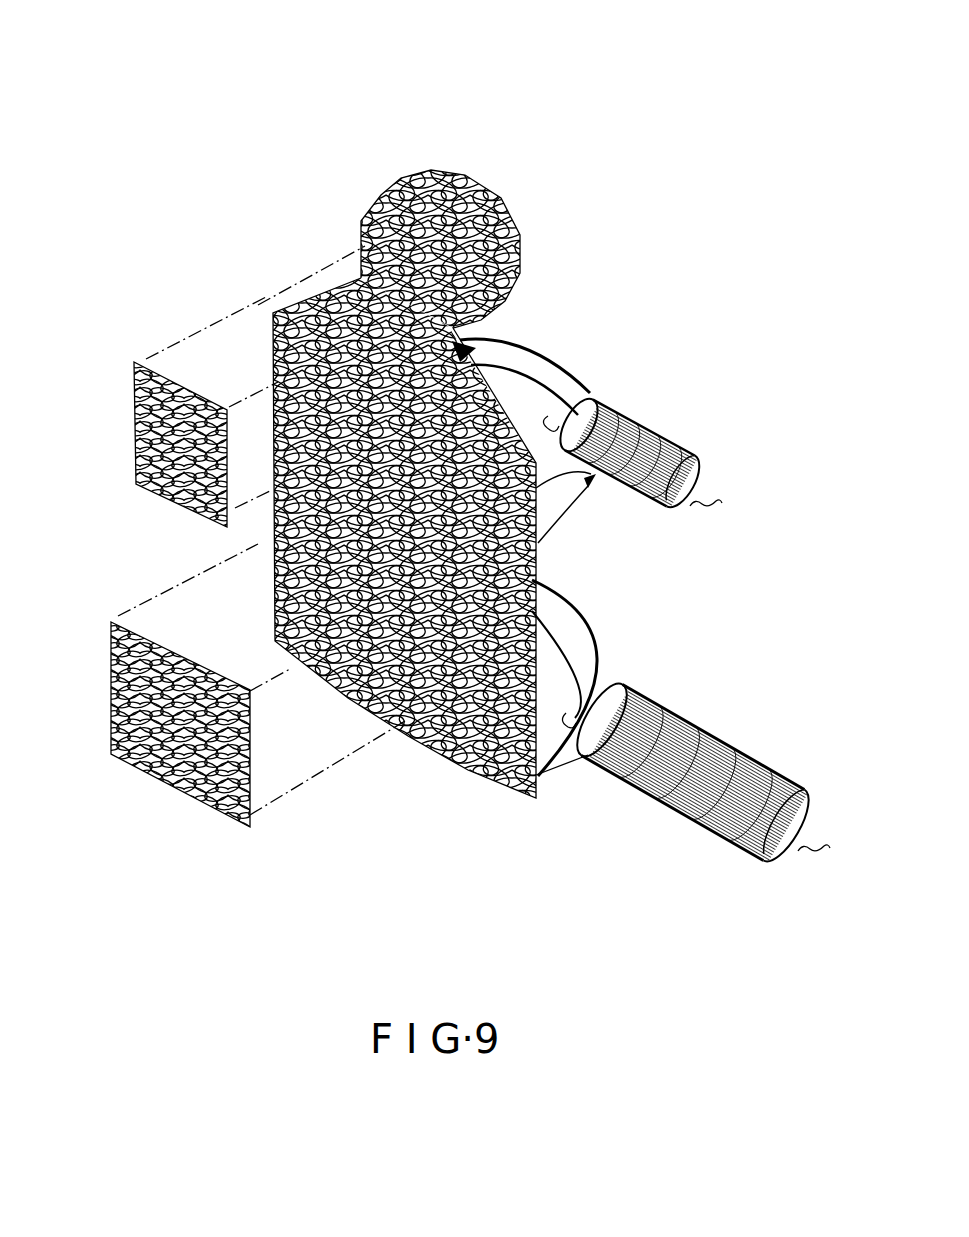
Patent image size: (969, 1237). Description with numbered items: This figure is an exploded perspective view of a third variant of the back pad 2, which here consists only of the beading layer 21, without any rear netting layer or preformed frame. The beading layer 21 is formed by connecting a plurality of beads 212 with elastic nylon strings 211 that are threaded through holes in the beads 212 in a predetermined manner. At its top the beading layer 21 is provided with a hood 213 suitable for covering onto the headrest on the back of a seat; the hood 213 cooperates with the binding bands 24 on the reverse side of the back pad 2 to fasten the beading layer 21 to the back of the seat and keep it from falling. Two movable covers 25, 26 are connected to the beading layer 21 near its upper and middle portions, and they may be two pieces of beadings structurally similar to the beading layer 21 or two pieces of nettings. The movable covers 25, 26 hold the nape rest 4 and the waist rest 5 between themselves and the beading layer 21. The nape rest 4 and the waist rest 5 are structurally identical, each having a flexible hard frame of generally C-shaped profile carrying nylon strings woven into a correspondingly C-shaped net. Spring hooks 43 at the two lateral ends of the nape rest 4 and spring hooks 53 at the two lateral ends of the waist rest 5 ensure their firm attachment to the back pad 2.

The back pad 2 is at (372, 406).
The beading layer 21 is at (256, 517).
The elastic nylon strings 211 is at (322, 266).
The beads 212 is at (270, 322).
The hood 213 is at (468, 172).
The binding bands 24 is at (512, 335).
The movable cover 25 is at (150, 428).
The movable cover 26 is at (110, 750).
The nape rest 4 is at (575, 458).
The spring hooks 43 is at (546, 414).
The waist rest 5 is at (706, 710).
The spring hooks 53 is at (537, 660).